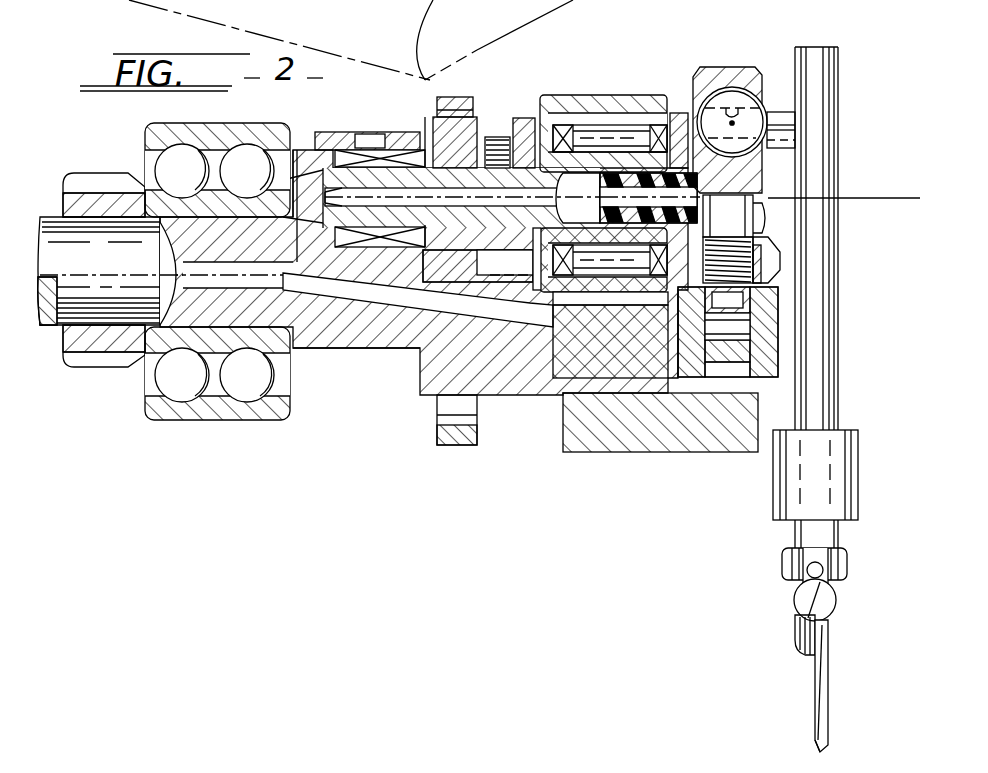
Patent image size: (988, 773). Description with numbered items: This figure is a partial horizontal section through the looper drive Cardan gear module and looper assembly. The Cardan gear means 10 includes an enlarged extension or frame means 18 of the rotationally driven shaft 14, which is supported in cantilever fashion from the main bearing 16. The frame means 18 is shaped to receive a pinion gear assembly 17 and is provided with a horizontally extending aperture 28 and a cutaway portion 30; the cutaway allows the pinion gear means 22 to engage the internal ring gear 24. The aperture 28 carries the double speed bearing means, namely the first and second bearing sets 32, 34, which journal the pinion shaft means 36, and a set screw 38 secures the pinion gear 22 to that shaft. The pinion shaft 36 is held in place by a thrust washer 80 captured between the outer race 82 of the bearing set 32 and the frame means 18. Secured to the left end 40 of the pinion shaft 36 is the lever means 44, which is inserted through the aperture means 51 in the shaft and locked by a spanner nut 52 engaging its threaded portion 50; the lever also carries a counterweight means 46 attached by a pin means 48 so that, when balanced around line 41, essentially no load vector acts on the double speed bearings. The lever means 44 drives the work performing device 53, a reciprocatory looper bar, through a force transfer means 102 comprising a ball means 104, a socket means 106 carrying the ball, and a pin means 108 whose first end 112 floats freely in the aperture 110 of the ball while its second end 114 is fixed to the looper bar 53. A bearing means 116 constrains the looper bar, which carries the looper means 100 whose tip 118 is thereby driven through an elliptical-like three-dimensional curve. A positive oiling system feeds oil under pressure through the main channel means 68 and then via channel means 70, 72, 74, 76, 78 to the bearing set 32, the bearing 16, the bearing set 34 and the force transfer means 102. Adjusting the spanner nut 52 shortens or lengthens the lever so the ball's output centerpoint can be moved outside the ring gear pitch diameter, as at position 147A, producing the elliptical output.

The Cardan gear means 10 is at (355, 366).
The rotationally driven shaft 14 is at (338, 333).
The bearing 16 is at (165, 135).
The pinion gear assembly 17 is at (493, 286).
The frame means 18 is at (560, 97).
The pinion gear means 22 is at (427, 118).
The internal ring gear 24 is at (463, 98).
The aperture 28 is at (540, 110).
The cutaway portion 30 is at (487, 137).
The first bearing set 32 is at (607, 137).
The second bearing set 34 is at (375, 148).
The pinion shaft means 36 is at (466, 225).
The set screw 38 is at (505, 130).
The left end 40 is at (760, 235).
The line 41 is at (873, 195).
The lever means 44 is at (775, 180).
The counterweight means 46 is at (767, 367).
The pin means 48 is at (768, 327).
The threaded portion 50 is at (760, 253).
The aperture means 51 is at (755, 211).
The spanner nut 52 is at (780, 280).
The work performing device 53 is at (818, 207).
The main channel means 68 is at (163, 262).
The channel means 70 is at (403, 302).
The channel means 72 is at (297, 267).
The channel means 74 is at (295, 165).
The channel means 76 is at (332, 165).
The channel means 78 is at (405, 150).
The thrust washer 80 is at (565, 112).
The outer race 82 is at (685, 140).
The looper means 100 is at (818, 672).
The force transfer means 102 is at (771, 60).
The ball means 104 is at (805, 154).
The socket means 106 is at (725, 92).
The pin means 108 is at (748, 138).
The aperture 110 is at (745, 88).
The first end 112 is at (693, 105).
The second end 114 is at (805, 115).
The bearing means 116 is at (772, 496).
The tip 118 is at (815, 750).
The output centerpoint position 147A is at (732, 123).